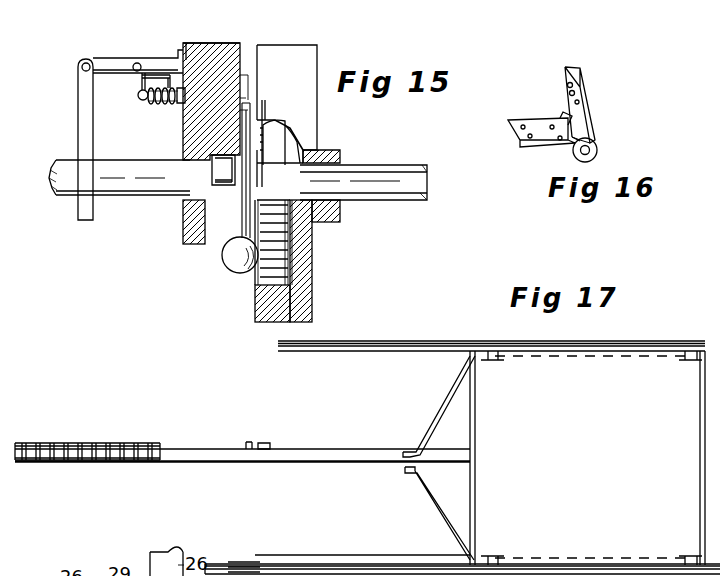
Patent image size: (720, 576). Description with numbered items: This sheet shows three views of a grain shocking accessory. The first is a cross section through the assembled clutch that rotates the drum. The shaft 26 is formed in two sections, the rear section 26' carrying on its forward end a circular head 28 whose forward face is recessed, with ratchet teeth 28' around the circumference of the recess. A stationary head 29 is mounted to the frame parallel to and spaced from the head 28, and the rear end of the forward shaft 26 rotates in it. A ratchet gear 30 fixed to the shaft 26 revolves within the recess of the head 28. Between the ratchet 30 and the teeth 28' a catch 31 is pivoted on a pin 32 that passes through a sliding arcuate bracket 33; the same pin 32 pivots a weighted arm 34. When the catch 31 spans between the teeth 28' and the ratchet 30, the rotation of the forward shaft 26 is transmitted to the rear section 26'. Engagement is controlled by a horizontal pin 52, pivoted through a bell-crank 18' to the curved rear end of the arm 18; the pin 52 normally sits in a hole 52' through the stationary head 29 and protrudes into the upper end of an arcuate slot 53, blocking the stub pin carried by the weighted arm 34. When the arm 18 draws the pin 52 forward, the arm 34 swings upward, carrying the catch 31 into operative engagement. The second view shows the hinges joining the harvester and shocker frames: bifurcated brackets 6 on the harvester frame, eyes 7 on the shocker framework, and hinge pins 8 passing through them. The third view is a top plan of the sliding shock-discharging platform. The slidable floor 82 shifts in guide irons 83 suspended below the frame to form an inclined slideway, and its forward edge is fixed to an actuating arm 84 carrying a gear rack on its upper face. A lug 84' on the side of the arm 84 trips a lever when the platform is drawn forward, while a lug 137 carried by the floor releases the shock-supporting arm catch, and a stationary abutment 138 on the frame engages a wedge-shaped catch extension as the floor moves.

In FIG. 16, the bifurcated bracket 6 is at (583, 80).
In FIG. 16, the eye 7 is at (530, 130).
In FIG. 16, the hinge pin 8 is at (598, 148).
In FIG. 15, the arm 18 is at (65, 139).
In FIG. 15, the bell-crank 18' is at (138, 48).
In FIG. 15, the shaft 26 is at (119, 196).
In FIG. 15, the rear section of shaft 26' is at (363, 203).
In FIG. 15, the circular head 28 is at (298, 104).
In FIG. 15, the ratchet teeth 28' is at (310, 261).
In FIG. 15, the stationary head 29 is at (212, 50).
In FIG. 15, the ratchet gear 30 is at (296, 225).
In FIG. 15, the catch 31 is at (283, 122).
In FIG. 15, the pin 32 is at (262, 149).
In FIG. 15, the sliding arcuate bracket 33 is at (212, 161).
In FIG. 15, the weighted arm 34 is at (222, 248).
In FIG. 15, the horizontal pin 52 is at (141, 97).
In FIG. 15, the hole 52' is at (201, 35).
In FIG. 15, the arcuate slot 53 is at (166, 103).
In FIG. 17, the slidable floor 82 is at (694, 351).
In FIG. 17, the guide iron 83 is at (447, 345).
In FIG. 17, the actuating arm 84 is at (242, 441).
In FIG. 17, the lug 84' is at (282, 433).
In FIG. 17, the lug 137 is at (672, 362).
In FIG. 17, the stationary abutment 138 is at (494, 361).